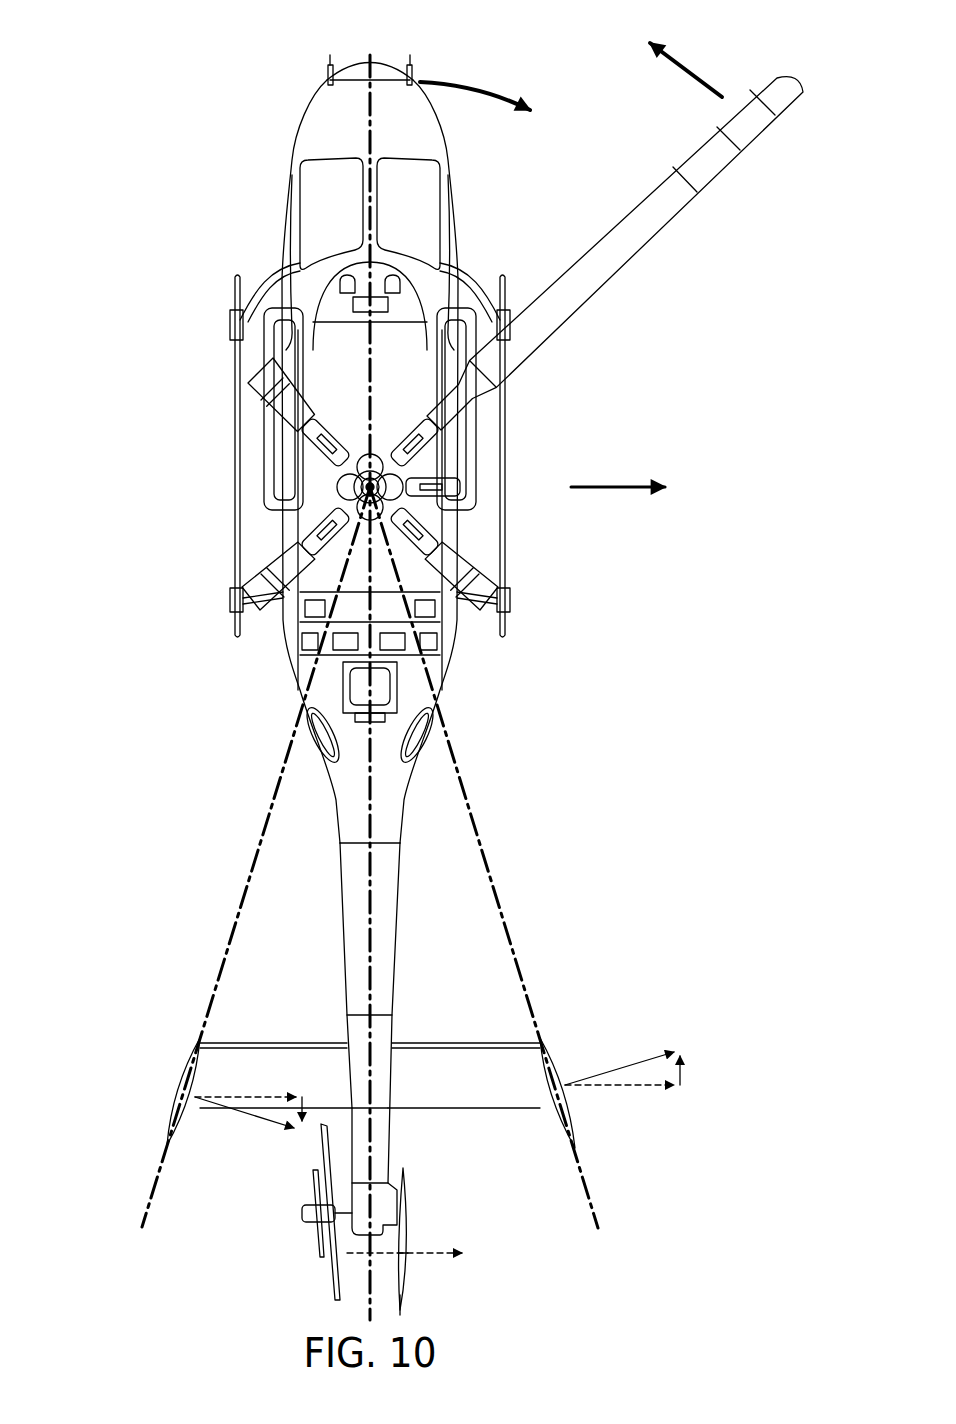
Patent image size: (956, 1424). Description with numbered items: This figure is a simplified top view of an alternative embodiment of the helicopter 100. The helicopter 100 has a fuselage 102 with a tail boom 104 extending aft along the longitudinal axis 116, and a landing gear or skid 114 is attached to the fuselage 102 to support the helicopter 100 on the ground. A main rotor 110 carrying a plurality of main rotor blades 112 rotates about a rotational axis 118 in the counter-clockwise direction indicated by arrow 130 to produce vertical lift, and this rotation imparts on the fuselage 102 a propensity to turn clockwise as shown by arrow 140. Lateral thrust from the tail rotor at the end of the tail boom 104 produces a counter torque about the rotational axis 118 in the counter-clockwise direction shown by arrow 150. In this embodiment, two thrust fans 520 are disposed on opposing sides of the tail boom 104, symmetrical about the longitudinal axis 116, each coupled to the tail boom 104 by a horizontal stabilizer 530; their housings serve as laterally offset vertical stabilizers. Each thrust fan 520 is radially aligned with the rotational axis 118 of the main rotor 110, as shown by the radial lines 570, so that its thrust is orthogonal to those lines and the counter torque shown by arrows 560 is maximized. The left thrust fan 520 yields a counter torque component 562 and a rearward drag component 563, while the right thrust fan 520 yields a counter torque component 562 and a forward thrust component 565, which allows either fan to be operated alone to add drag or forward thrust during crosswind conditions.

The helicopter 100 is at (275, 421).
The fuselage 102 is at (383, 60).
The tail boom 104 is at (398, 922).
The main rotor 110 is at (482, 343).
The main rotor blades 112 is at (718, 180).
The landing gear or skid 114 is at (510, 533).
The longitudinal axis 116 is at (368, 870).
The rotational axis 118 is at (362, 487).
The arrow (main rotor rotation direction) 130 is at (695, 68).
The arrow (fuselage rotation propensity) 140 is at (470, 85).
The arrow (tail rotor counter torque) 150 is at (433, 1255).
The thrust fans 520 is at (174, 1073).
The horizontal stabilizer 530 is at (262, 1042).
The arrows (counter torque) 560 is at (255, 1125).
The counter torque component 562 is at (233, 1097).
The rearward drag component 563 is at (308, 1097).
The forward thrust component 565 is at (683, 1080).
The radial lines 570 is at (228, 935).